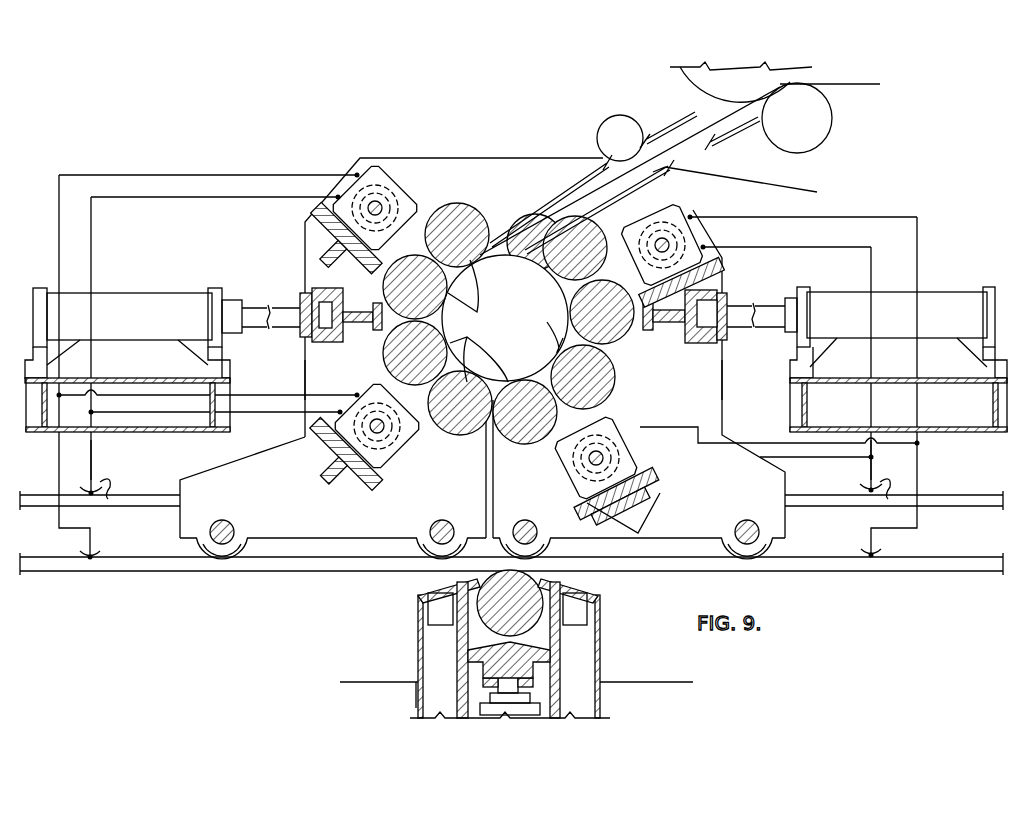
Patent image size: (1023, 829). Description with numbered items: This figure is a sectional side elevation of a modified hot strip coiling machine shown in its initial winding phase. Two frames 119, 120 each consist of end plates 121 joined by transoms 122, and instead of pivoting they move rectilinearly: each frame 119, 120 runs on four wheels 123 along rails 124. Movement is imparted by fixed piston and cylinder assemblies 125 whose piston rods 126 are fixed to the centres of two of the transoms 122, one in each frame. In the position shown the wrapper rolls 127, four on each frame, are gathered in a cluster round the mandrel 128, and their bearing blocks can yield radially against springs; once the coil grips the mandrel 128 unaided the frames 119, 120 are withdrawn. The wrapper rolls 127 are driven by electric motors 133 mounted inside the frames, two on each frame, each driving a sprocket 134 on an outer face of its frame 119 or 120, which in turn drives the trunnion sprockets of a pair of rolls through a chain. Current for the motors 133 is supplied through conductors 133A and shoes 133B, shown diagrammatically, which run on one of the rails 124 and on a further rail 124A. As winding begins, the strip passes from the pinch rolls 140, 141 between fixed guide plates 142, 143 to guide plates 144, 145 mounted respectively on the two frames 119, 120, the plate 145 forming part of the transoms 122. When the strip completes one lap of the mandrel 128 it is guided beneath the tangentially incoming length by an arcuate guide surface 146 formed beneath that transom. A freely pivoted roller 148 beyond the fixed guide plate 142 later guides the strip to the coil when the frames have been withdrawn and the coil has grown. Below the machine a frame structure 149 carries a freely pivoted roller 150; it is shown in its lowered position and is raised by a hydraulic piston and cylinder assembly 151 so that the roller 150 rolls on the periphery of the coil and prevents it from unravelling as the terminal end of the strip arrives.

The frame 119 is at (298, 244).
The frame 120 is at (727, 410).
The end plate 121 is at (313, 380).
The transom 122 is at (313, 275).
The wheel 123 is at (242, 556).
The rail 124 is at (305, 565).
The further rail 124A is at (37, 496).
The piston and cylinder assembly 125 is at (142, 305).
The piston rod 126 is at (258, 318).
The wrapper roll 127 is at (580, 306).
The mandrel 128 is at (505, 318).
The electric motor 133 is at (393, 187).
The conductor 133A is at (59, 238).
The shoe 133B is at (96, 552).
The sprocket 134 is at (400, 198).
The pinch roll 140 is at (782, 78).
The pinch roll 141 is at (817, 118).
The fixed guide plate 142 is at (690, 118).
The fixed guide plate 143 is at (735, 134).
The guide plate 144 is at (585, 172).
The guide plate 145 is at (628, 183).
The arcuate guide surface 146 is at (495, 258).
The freely pivoted roller 148 is at (597, 138).
The frame structure 149 is at (556, 652).
The freely pivoted roller 150 is at (500, 583).
The hydraulic piston and cylinder assembly 151 is at (521, 716).